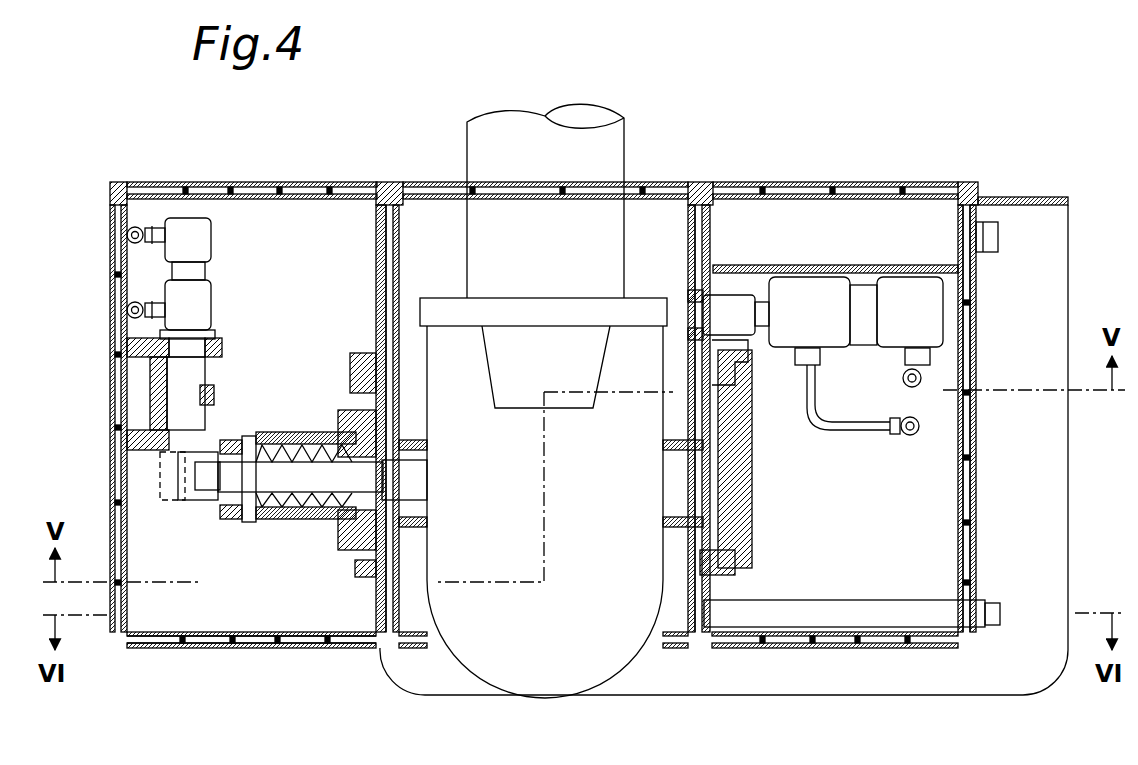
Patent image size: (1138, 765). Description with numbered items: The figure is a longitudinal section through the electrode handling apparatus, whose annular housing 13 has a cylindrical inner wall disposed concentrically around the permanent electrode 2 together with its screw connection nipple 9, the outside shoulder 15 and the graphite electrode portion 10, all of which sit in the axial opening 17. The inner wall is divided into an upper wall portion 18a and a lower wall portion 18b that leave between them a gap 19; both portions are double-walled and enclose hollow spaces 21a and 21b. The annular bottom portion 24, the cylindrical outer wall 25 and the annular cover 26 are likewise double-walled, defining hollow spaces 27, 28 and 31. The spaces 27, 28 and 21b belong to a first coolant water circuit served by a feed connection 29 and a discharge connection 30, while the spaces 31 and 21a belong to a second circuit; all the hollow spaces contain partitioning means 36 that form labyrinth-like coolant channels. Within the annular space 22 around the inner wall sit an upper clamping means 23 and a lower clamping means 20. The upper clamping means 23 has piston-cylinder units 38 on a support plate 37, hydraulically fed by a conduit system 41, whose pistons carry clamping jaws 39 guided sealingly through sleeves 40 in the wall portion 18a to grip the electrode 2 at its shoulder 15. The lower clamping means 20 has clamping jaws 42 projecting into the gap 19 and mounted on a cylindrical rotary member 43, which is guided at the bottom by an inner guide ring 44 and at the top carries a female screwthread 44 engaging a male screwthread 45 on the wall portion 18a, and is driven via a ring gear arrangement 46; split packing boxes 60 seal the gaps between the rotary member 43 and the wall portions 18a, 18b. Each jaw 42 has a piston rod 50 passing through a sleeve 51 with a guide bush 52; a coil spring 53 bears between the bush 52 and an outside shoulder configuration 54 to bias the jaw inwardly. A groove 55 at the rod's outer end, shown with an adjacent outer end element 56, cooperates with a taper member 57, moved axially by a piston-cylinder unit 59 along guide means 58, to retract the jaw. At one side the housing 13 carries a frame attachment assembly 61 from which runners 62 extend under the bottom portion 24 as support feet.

The permanent electrode 2 is at (592, 105).
The screw connection nipple 9 is at (546, 367).
The electrode portion 10 is at (495, 668).
The housing 13 is at (108, 250).
The outside shoulder 15 is at (640, 312).
The opening 17 is at (543, 418).
The upper wall portion 18a is at (705, 228).
The lower wall portion 18b is at (690, 630).
The gap 19 is at (698, 460).
The lower clamping means 20 is at (290, 528).
The hollow space 21a is at (383, 200).
The hollow space 21b is at (386, 606).
The annular space 22 is at (251, 418).
The upper clamping means 23 is at (858, 350).
The annular bottom portion 24 is at (258, 648).
The cylindrical outer wall 25 is at (972, 535).
The annular cover 26 is at (195, 182).
The hollow space 27 is at (192, 645).
The hollow space 28 is at (118, 297).
The feed connection 29 is at (992, 612).
The discharge connection 30 is at (995, 238).
The hollow space 31 is at (870, 182).
The partitioning means 36 is at (240, 194).
The support plate 37 is at (790, 275).
The piston-cylinder unit 38 is at (900, 300).
The clamping jaw 39 is at (745, 325).
The sleeve 40 is at (690, 322).
The conduit system 41 is at (920, 380).
The clamping jaw 42 is at (408, 484).
The rotary member 43 is at (752, 478).
The inner guide ring 44 is at (398, 362).
The male screwthread 45 is at (350, 372).
The ring gear arrangement 46 is at (750, 400).
The piston rod 50 is at (278, 485).
The sleeve 51 is at (333, 485).
The guide bush 52 is at (230, 520).
The coil spring 53 is at (305, 520).
The outside shoulder configuration 54 is at (345, 470).
The groove 55 is at (195, 505).
The piston end 56 is at (161, 493).
The taper member 57 is at (180, 368).
The guide means 58 is at (214, 396).
The piston-cylinder unit 59 is at (195, 312).
The split packing box 60 is at (690, 455).
The frame attachment assembly 61 is at (1070, 492).
The runner 62 is at (950, 680).